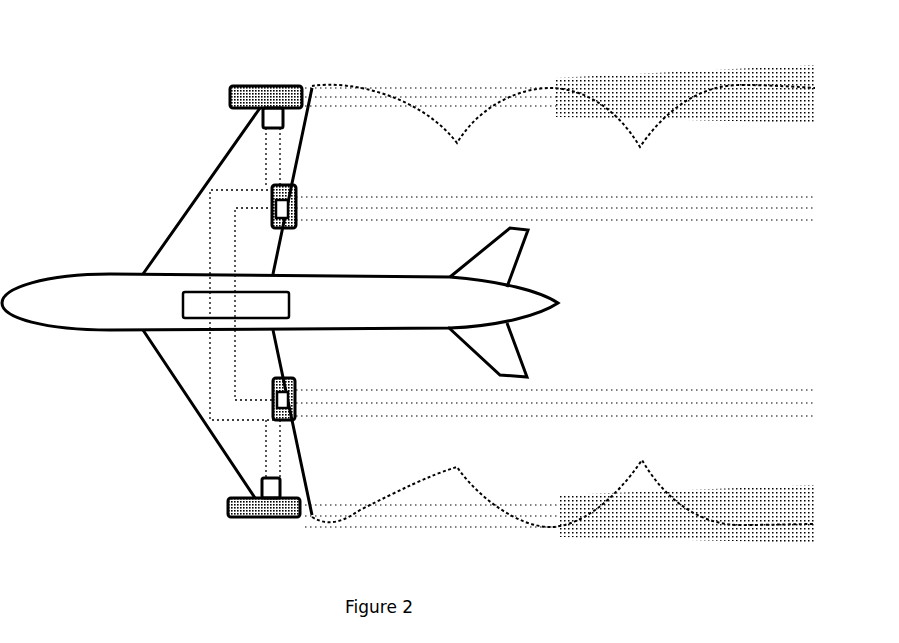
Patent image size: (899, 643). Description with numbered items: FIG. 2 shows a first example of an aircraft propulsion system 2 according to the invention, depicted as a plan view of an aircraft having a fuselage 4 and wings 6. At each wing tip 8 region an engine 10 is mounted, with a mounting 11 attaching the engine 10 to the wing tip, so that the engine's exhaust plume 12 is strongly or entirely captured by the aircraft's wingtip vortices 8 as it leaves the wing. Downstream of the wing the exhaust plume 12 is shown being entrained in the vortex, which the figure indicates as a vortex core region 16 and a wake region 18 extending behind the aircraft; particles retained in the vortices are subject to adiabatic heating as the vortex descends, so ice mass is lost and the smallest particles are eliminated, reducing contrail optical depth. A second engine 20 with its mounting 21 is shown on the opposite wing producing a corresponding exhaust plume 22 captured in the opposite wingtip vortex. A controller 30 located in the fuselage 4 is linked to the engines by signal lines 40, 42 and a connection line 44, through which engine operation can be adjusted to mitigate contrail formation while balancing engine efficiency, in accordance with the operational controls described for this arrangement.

The aircraft 2 is at (68, 122).
The fuselage 4 is at (72, 336).
The wing 6 is at (148, 258).
The wingtip vortices 8 is at (318, 80).
The engine 10 is at (232, 95).
The sensor mount 11 is at (262, 118).
The exhaust plume 12 is at (448, 90).
The vortex core region 16 is at (548, 110).
The wake region 18 is at (795, 128).
The sensor unit 20 is at (297, 418).
The sensor element 21 is at (285, 378).
The lower wing tip vortex 22 is at (447, 410).
The controller 30 is at (289, 305).
The signal line 40 is at (262, 170).
The signal line 42 is at (237, 257).
The connection line 44 is at (284, 130).